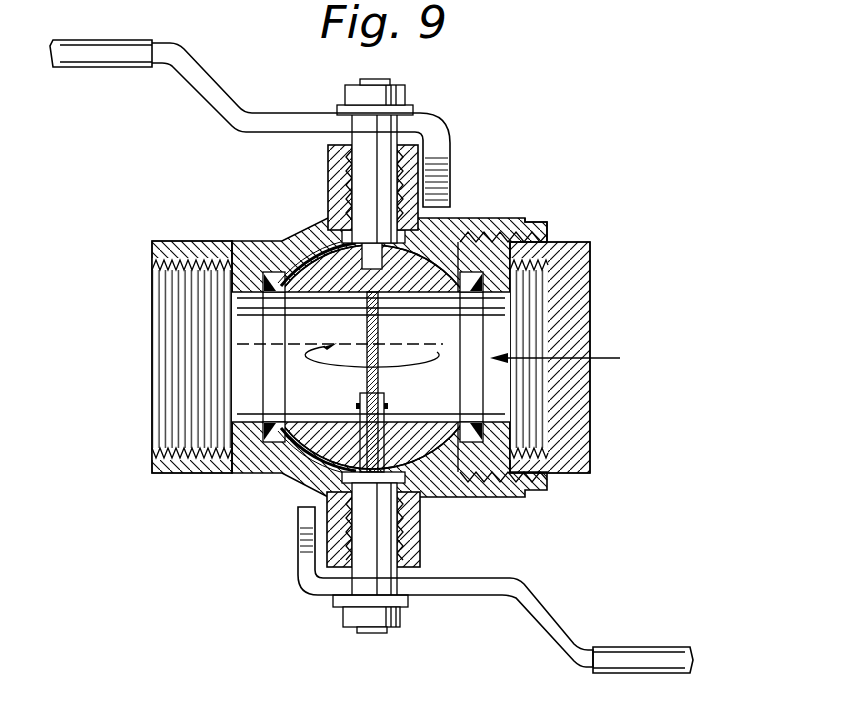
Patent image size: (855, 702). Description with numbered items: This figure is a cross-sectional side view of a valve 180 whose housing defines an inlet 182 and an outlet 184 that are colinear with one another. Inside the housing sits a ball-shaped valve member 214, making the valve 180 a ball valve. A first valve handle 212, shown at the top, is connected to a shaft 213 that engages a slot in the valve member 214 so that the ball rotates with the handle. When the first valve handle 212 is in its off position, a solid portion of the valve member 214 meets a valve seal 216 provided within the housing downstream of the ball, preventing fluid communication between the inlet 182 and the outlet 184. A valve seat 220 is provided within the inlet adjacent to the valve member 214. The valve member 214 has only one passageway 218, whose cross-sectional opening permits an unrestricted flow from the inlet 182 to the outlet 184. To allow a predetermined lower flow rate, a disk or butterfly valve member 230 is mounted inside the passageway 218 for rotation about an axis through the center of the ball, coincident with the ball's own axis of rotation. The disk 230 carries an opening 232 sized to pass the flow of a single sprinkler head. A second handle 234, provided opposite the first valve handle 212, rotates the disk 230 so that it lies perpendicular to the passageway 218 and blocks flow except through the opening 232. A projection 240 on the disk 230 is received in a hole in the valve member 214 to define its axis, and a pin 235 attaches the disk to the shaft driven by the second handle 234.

The valve 180 is at (475, 218).
The inlet 182 is at (150, 471).
The outlet 184 is at (582, 257).
The first valve handle 212 is at (437, 125).
The shaft 213 is at (362, 166).
The valve member 214 is at (316, 478).
The valve seal 216 is at (524, 226).
The passageway 218 is at (266, 430).
The valve seat 220 is at (282, 277).
The disk or butterfly valve member 230 is at (367, 379).
The opening or passageway 232 is at (390, 346).
The second valve actuator or handle 234 is at (308, 594).
The pin 235 is at (388, 406).
The projection 240 is at (330, 235).